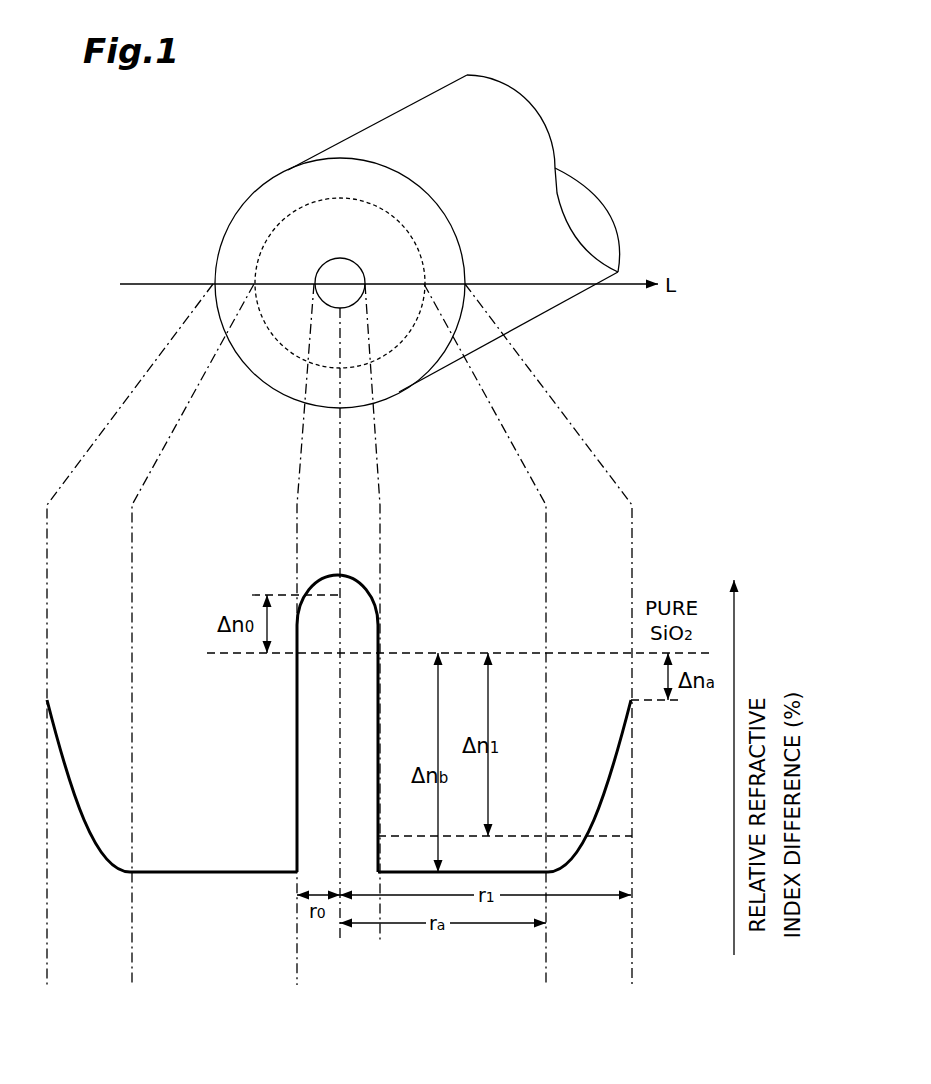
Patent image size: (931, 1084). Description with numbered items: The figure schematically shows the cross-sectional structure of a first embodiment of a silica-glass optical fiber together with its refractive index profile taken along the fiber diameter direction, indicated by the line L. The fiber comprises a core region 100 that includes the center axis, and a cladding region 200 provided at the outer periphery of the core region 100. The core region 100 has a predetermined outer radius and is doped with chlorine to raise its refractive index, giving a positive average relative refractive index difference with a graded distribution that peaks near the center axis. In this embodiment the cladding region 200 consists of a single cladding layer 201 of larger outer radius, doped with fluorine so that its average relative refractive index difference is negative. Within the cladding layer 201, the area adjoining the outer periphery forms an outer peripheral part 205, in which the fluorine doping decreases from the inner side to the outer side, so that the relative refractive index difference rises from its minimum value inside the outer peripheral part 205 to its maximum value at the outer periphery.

The core region 100 is at (380, 553).
The cladding region 200 is at (47, 553).
The cladding layer 201 is at (297, 971).
The outer peripheral part 205 is at (132, 991).